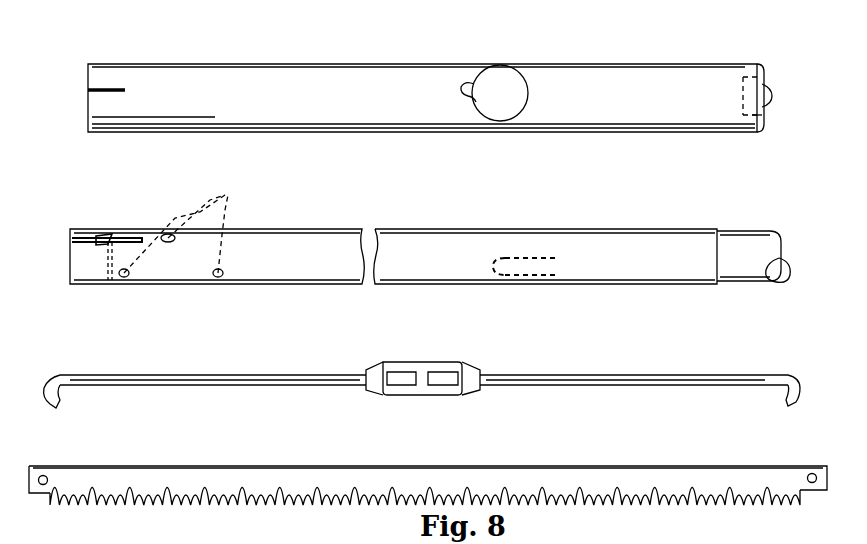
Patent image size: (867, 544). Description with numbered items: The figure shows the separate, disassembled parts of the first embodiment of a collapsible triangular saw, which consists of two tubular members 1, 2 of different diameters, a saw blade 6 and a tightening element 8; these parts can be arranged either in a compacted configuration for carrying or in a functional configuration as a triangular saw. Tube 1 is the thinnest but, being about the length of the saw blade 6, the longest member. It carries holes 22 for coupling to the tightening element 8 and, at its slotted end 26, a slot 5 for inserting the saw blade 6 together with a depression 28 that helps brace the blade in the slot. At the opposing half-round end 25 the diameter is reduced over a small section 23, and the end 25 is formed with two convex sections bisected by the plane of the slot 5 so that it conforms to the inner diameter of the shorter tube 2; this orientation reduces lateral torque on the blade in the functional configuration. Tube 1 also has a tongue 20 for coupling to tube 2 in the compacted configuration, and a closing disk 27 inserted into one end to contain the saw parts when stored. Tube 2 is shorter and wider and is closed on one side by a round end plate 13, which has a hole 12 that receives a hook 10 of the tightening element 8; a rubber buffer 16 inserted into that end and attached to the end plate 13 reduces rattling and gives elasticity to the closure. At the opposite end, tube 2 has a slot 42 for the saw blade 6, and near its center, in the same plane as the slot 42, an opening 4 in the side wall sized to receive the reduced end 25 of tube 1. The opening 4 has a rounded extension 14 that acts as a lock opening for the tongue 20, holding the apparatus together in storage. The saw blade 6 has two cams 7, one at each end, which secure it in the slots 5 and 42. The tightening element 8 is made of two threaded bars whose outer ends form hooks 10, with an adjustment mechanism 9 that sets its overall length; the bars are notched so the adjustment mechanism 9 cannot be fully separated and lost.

The tubular member 1 is at (632, 224).
The tubular member 2 is at (586, 60).
The opening 4 is at (505, 82).
The slot 5 is at (130, 238).
The saw blade 6 is at (612, 466).
The cam 7 is at (45, 476).
The tightening element 8 is at (594, 372).
The adjustment mechanism 9 is at (472, 368).
The hook 10 is at (64, 378).
The hole 12 is at (761, 82).
The end plate 13 is at (758, 116).
The rounded extension 14 is at (466, 88).
The rubber buffer 16 is at (768, 95).
The tongue 20 is at (518, 260).
The hole 22 is at (178, 225).
The reduced diameter section 23 is at (745, 240).
The half-round end 25 is at (790, 266).
The slotted end 26 is at (70, 257).
The closing disk 27 is at (110, 260).
The depression 28 is at (96, 238).
The slot 42 is at (112, 90).